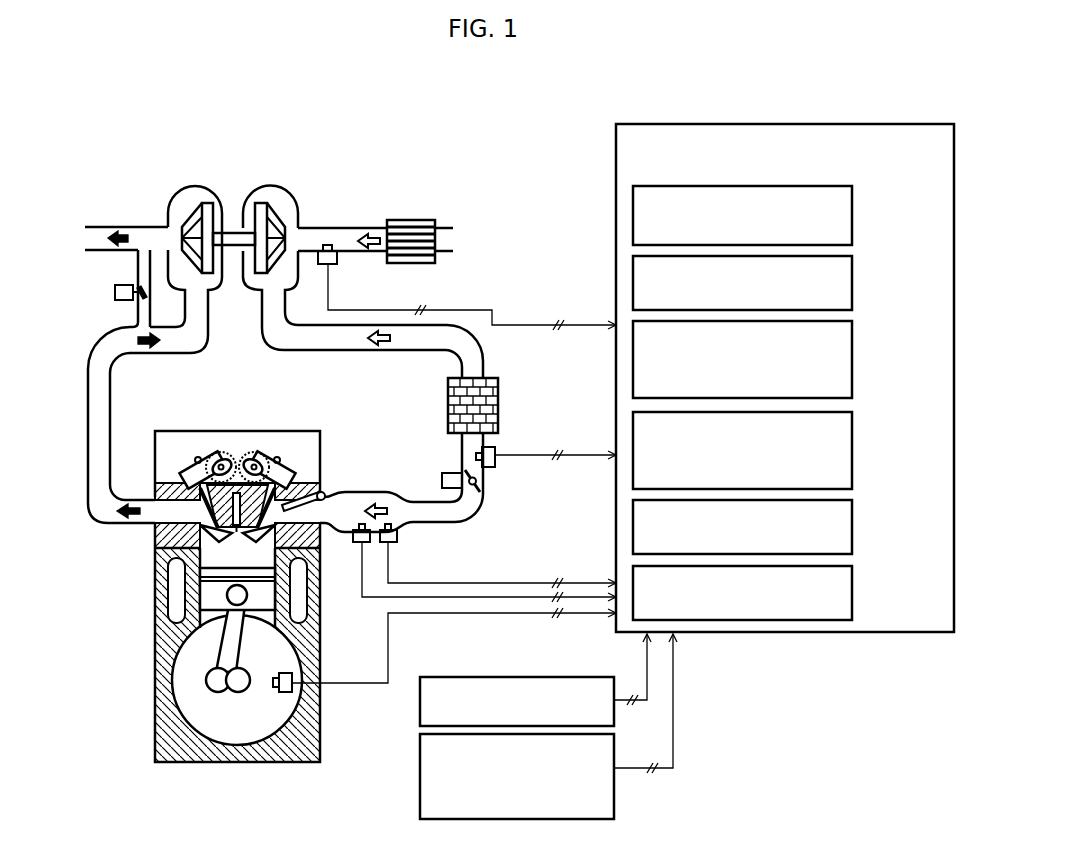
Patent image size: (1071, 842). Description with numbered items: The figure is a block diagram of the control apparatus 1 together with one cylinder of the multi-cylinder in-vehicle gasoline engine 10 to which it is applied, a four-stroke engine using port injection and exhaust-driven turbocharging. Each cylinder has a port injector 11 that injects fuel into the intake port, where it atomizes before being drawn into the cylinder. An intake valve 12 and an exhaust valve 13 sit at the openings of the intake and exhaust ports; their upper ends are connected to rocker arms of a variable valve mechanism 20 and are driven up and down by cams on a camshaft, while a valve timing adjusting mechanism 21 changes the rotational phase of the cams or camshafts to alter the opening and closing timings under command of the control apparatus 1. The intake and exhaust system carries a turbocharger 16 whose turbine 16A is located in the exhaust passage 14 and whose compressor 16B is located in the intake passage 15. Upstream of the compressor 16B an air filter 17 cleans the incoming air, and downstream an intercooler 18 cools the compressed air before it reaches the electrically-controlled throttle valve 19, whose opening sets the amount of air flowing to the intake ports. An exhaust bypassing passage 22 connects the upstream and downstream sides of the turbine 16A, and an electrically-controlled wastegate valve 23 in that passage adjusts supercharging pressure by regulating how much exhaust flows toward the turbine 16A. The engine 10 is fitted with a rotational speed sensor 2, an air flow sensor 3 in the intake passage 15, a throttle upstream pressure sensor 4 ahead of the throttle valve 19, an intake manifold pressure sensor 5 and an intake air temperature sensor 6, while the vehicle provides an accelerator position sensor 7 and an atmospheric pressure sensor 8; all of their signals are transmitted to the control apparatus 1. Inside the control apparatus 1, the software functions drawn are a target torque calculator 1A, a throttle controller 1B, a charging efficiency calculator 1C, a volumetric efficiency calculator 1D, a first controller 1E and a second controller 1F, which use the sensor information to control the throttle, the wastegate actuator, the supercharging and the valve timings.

The control apparatus 1 is at (880, 632).
The target torque calculator 1A is at (853, 218).
The throttle controller 1B is at (853, 286).
The charging efficiency calculator 1C is at (853, 364).
The volumetric efficiency calculator 1D is at (853, 454).
The first controller 1E is at (853, 530).
The second controller 1F is at (853, 596).
The rotational speed sensor 2 is at (292, 690).
The air flow sensor 3 is at (337, 257).
The throttle upstream pressure sensor 4 is at (495, 462).
The intake manifold pressure sensor 5 is at (398, 536).
The intake air temperature sensor 6 is at (366, 545).
The accelerator position sensor 7 is at (418, 701).
The atmospheric pressure sensor 8 is at (418, 776).
The engine 10 is at (107, 626).
The port injector 11 is at (322, 490).
The intake valve 12 is at (317, 530).
The exhaust valve 13 is at (167, 527).
The exhaust passage 14 is at (112, 523).
The intake passage 15 is at (394, 352).
The turbocharger 16 is at (236, 199).
The turbine 16A is at (187, 215).
The compressor 16B is at (282, 212).
The air filter 17 is at (404, 220).
The intercooler 18 is at (499, 400).
The throttle valve 19 is at (440, 476).
The variable valve mechanism 20 is at (188, 431).
The valve timing adjusting mechanism 21 is at (241, 452).
The exhaust bypassing passage 22 is at (136, 273).
The wastegate valve 23 is at (122, 301).